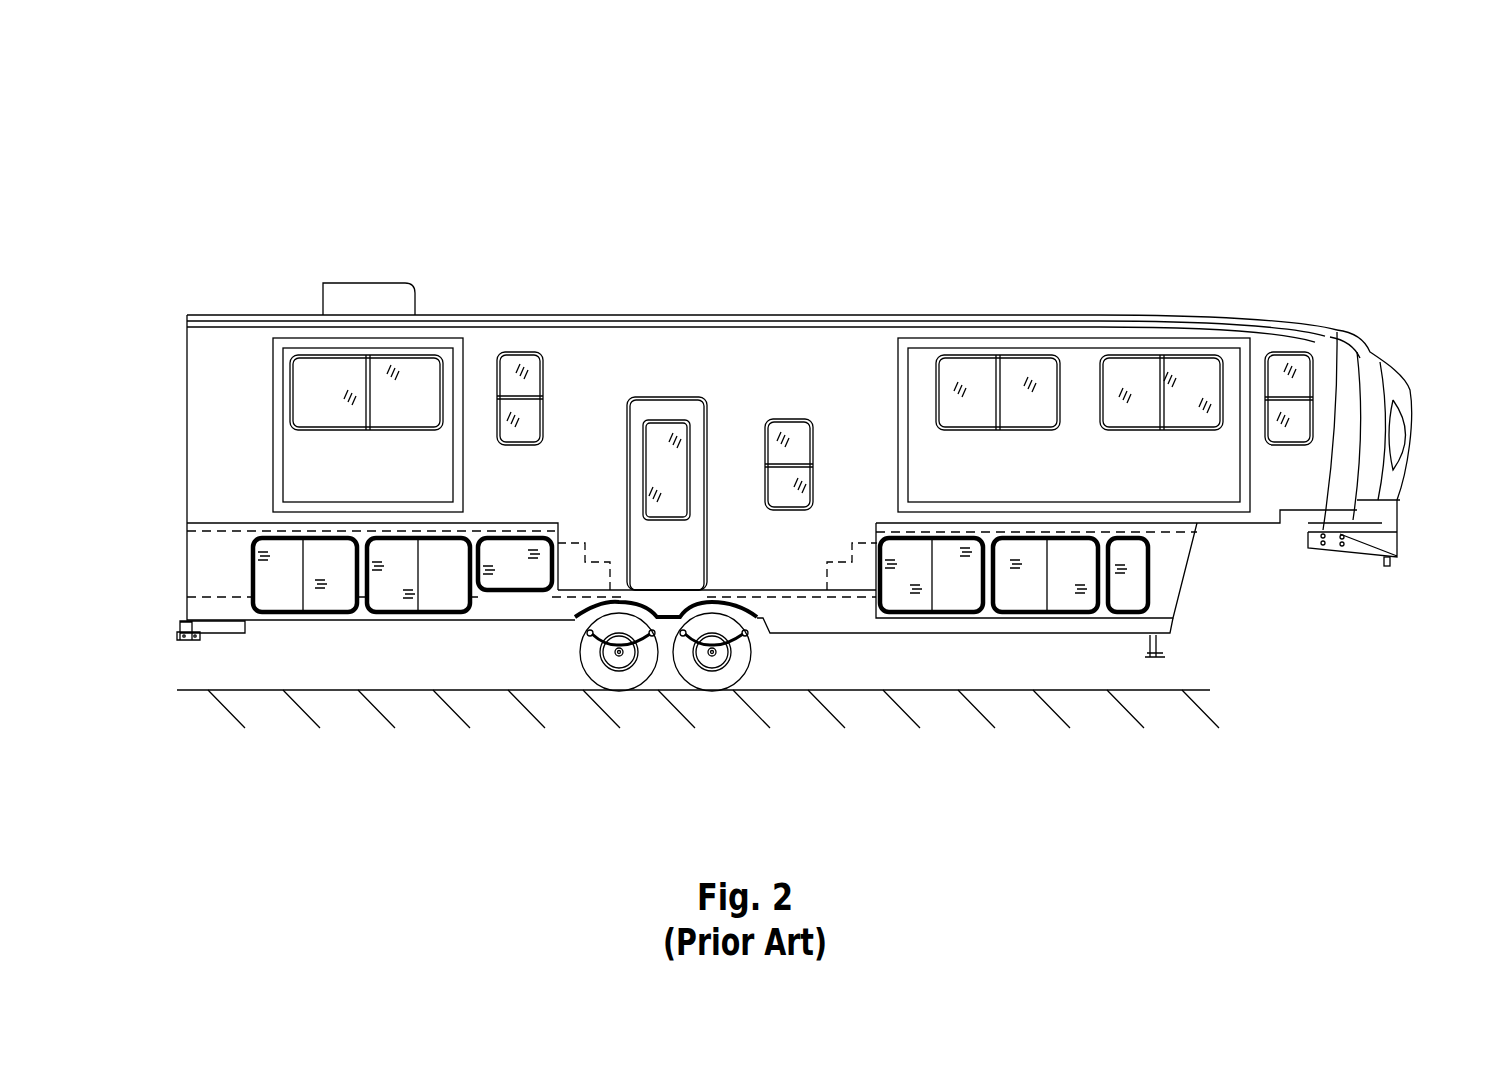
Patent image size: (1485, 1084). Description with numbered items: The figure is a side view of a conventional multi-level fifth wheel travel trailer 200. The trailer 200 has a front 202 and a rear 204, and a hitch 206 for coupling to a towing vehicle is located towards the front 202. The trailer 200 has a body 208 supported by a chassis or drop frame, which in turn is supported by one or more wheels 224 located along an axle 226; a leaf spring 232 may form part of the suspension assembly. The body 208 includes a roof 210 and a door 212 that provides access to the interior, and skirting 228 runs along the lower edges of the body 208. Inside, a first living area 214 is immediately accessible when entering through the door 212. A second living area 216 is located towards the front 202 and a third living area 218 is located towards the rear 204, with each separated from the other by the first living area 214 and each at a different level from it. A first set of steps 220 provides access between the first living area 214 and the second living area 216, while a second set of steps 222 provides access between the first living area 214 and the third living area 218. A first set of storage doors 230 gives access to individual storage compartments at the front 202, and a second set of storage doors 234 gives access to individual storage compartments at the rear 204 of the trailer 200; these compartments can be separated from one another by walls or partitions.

The multi-level fifth wheel travel trailer 200 is at (1056, 170).
The front 202 is at (1413, 350).
The rear 204 is at (157, 353).
The hitch 206 is at (1387, 566).
The body 208 is at (1272, 343).
The roof 210 is at (920, 315).
The door 212 is at (667, 408).
The first living area 214 is at (578, 358).
The second living area 216 is at (1205, 478).
The third living area 218 is at (238, 363).
The first set of steps 220 is at (850, 590).
The second set of steps 222 is at (602, 560).
The wheels 224 is at (643, 673).
The axle 226 is at (619, 652).
The skirting 228 is at (822, 627).
The first set of storage doors 230 is at (957, 602).
The leaf spring 232 is at (590, 633).
The second set of storage doors 234 is at (328, 600).